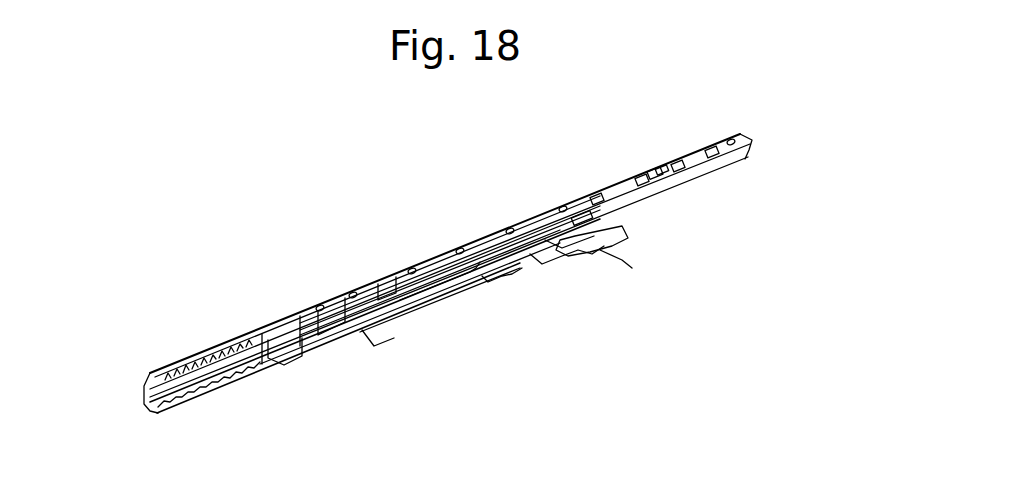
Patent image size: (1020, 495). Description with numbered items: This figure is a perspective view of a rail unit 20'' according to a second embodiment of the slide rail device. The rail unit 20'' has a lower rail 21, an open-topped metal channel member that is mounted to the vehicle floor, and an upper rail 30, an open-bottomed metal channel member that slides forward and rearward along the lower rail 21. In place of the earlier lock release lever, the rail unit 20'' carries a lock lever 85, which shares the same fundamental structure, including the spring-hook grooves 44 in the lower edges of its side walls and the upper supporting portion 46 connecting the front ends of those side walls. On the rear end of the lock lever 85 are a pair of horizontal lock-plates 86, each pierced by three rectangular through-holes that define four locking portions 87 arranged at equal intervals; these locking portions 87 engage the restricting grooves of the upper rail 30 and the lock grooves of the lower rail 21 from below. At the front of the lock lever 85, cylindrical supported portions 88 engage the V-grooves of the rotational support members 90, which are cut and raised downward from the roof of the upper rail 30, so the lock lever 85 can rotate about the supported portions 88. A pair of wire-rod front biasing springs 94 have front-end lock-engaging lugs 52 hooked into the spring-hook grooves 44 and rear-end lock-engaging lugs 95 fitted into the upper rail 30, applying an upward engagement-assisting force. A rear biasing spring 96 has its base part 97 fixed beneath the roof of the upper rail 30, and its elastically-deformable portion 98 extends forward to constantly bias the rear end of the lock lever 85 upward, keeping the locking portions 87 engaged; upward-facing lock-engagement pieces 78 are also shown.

The rail unit 20'' is at (445, 236).
The upper rail 30 is at (721, 136).
The rear biasing spring 96 is at (660, 183).
The base part 97 is at (661, 170).
The elastically-deformable portion 98 is at (576, 214).
The lower rail 21 is at (185, 360).
The upper supporting portion 46 is at (272, 320).
The lock lever 85 is at (325, 301).
The rotational support member 90 is at (386, 288).
The upward-facing lock-engagement piece 78 is at (290, 360).
The spring-hook groove 44 is at (340, 346).
The front-end lock-engaging lug 52 is at (380, 340).
The cylindrical supported portion 88 is at (400, 283).
The front biasing spring 94 is at (434, 273).
The rear-end lock-engaging lug 95 is at (502, 278).
The locking portion 87 is at (542, 264).
The horizontal lock-plate 86 is at (565, 254).